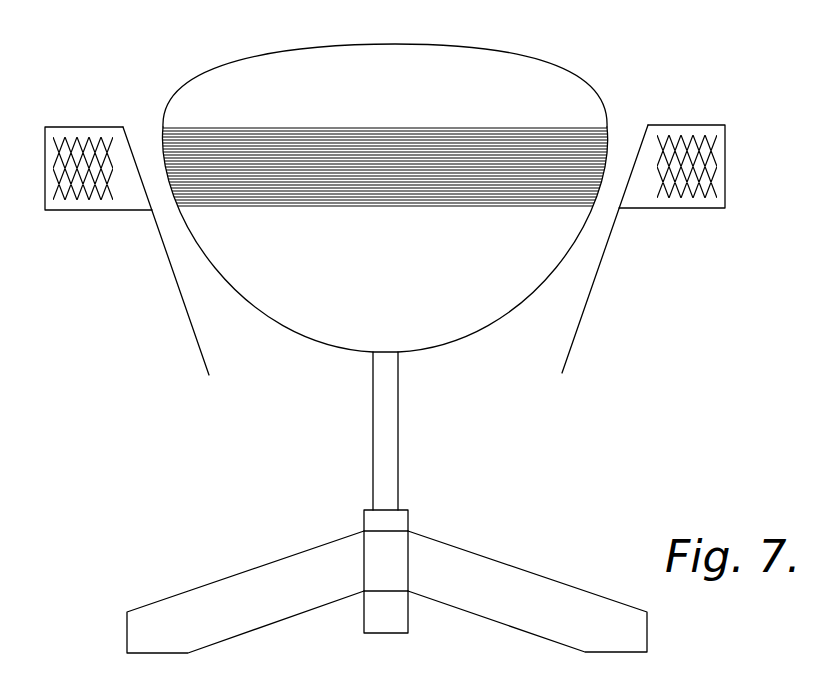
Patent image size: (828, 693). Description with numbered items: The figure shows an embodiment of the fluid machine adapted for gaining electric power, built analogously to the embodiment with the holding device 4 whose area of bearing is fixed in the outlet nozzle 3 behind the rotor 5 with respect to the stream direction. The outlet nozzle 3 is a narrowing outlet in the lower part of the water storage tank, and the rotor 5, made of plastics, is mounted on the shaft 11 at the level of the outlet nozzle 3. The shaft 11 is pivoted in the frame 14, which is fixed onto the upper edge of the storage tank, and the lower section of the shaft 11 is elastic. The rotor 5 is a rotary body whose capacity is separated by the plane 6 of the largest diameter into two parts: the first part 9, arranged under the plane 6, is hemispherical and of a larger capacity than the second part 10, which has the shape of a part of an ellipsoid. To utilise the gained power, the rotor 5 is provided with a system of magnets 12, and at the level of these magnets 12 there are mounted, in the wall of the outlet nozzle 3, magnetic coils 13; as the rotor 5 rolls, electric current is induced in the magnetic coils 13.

The outlet nozzle 3 is at (195, 337).
The holding device 4 is at (358, 447).
The rotor 5 is at (545, 297).
The plane of the largest diameter 6 is at (195, 127).
The first part of the rotor 9 is at (225, 248).
The second part of the rotor 10 is at (485, 70).
The shaft 11 is at (387, 417).
The magnets 12 is at (567, 147).
The magnetic coils 13 is at (103, 167).
The frame 14 is at (518, 583).